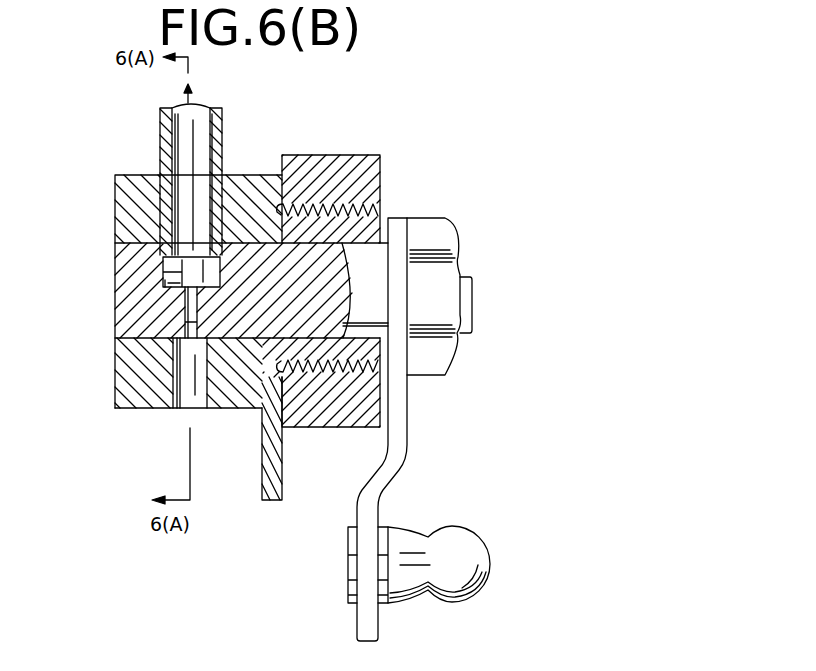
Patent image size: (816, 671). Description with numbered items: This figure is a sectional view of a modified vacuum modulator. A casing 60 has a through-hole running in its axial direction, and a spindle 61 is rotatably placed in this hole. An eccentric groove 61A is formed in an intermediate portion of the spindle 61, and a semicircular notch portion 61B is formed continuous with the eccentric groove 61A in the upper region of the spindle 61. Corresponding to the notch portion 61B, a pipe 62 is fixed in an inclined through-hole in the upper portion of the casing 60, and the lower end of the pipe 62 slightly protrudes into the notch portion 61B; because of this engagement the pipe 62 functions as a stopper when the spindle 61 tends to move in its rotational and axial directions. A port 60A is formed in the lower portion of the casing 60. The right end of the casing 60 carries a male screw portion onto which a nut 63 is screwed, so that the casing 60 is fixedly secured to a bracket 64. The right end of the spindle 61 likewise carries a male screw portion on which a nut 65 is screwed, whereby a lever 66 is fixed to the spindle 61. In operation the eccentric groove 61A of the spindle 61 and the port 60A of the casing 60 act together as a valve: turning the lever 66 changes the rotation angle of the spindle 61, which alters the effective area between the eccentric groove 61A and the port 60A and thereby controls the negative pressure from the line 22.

The line 22 is at (190, 92).
The casing 60 is at (132, 211).
The port 60A is at (200, 387).
The spindle 61 is at (122, 268).
The eccentric groove 61A is at (180, 327).
The notch portion 61B is at (165, 283).
The pipe 62 is at (222, 133).
The nut 63 is at (350, 155).
The bracket 64 is at (262, 457).
The nut 65 is at (430, 228).
The lever 66 is at (408, 422).